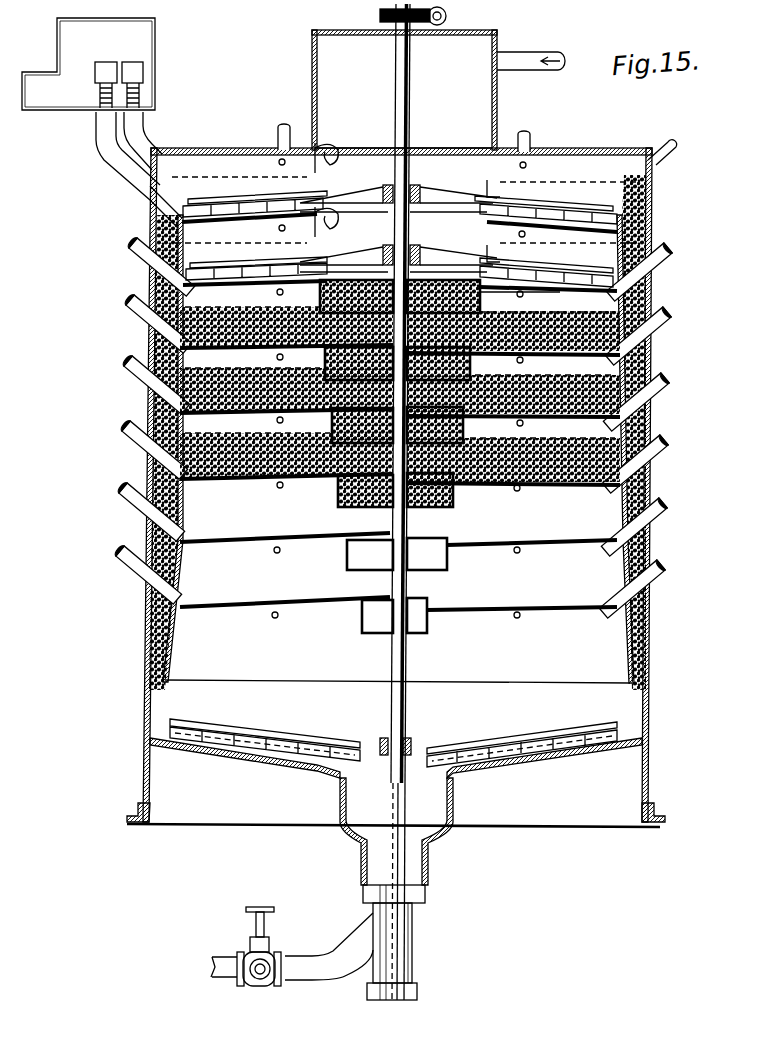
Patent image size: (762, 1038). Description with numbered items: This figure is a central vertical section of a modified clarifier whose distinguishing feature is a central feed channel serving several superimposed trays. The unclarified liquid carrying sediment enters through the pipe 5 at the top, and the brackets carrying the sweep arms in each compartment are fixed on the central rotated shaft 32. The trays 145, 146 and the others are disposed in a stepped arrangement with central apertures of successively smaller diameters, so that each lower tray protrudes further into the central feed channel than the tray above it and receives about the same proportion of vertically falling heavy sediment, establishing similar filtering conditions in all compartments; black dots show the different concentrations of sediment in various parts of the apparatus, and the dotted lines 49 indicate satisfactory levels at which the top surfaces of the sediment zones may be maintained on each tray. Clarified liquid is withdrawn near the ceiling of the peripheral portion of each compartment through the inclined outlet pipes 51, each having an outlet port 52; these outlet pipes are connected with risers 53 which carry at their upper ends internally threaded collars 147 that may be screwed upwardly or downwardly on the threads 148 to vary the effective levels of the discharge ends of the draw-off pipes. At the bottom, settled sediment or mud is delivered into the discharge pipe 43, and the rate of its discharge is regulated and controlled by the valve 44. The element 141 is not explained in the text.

The pipe 5 is at (537, 58).
The shaft 32 is at (409, 104).
The discharge pipe 43 is at (330, 950).
The valve 44 is at (252, 957).
The dotted lines 49 is at (406, 388).
The clarified liquid outlet pipes 51 is at (280, 134).
The outlet port 52 is at (279, 163).
The risers 53 is at (96, 126).
The deflector 141 is at (523, 236).
The tray 145 is at (522, 297).
The tray 146 is at (538, 362).
The internally threaded collars 147 is at (108, 73).
The threads 148 is at (128, 100).